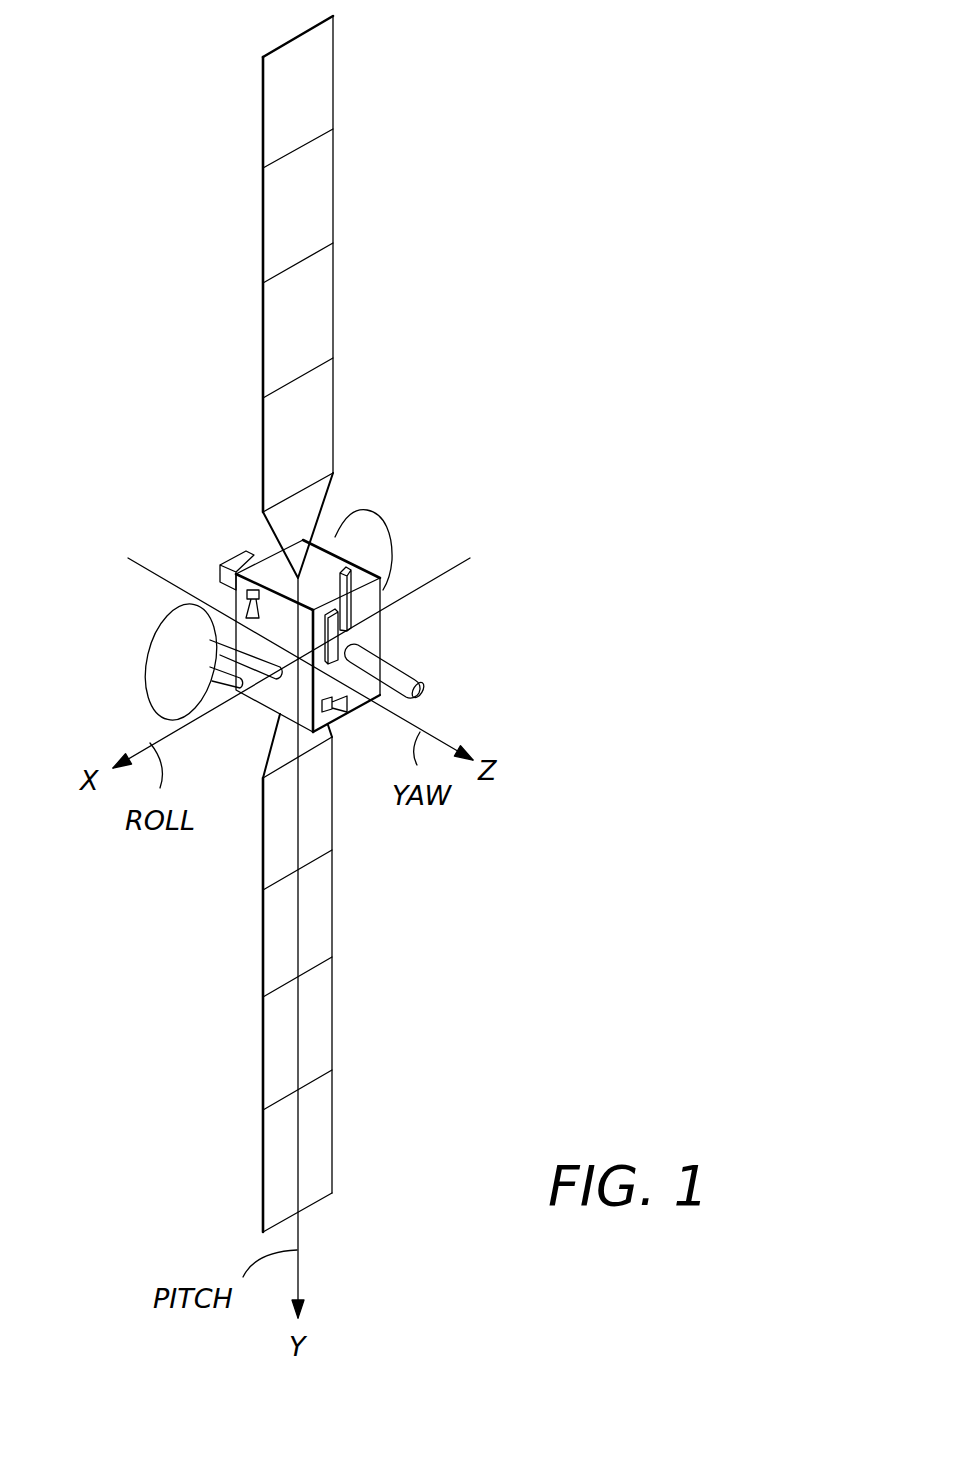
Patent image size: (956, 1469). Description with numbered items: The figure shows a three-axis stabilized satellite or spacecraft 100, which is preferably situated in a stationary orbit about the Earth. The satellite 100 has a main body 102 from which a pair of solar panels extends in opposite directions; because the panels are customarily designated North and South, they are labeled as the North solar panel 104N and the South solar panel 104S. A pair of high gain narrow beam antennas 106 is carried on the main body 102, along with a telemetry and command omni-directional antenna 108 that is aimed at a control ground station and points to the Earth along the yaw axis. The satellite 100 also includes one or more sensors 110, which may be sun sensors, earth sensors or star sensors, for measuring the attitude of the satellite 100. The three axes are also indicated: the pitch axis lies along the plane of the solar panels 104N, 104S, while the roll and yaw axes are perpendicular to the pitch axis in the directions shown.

The three-axis stabilized satellite 100 is at (413, 250).
The main body 102 is at (370, 633).
The North solar panel 104N is at (313, 200).
The South solar panel 104S is at (324, 1019).
The high gain narrow beam antenna 106 is at (378, 520).
The telemetry and command omni-directional antenna 108 is at (410, 672).
The sensor 110 is at (248, 590).